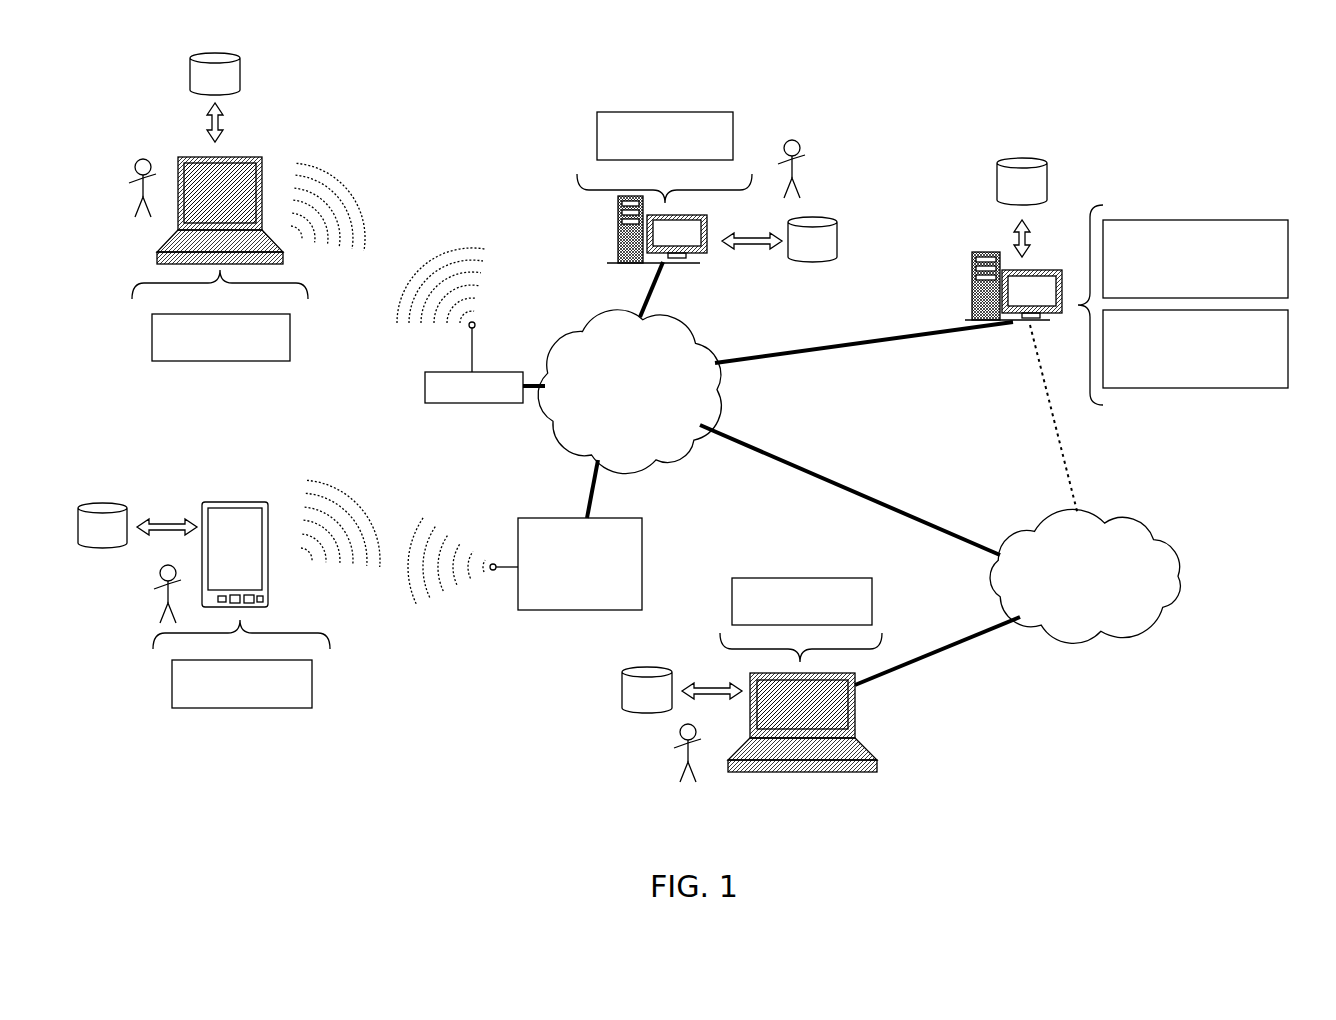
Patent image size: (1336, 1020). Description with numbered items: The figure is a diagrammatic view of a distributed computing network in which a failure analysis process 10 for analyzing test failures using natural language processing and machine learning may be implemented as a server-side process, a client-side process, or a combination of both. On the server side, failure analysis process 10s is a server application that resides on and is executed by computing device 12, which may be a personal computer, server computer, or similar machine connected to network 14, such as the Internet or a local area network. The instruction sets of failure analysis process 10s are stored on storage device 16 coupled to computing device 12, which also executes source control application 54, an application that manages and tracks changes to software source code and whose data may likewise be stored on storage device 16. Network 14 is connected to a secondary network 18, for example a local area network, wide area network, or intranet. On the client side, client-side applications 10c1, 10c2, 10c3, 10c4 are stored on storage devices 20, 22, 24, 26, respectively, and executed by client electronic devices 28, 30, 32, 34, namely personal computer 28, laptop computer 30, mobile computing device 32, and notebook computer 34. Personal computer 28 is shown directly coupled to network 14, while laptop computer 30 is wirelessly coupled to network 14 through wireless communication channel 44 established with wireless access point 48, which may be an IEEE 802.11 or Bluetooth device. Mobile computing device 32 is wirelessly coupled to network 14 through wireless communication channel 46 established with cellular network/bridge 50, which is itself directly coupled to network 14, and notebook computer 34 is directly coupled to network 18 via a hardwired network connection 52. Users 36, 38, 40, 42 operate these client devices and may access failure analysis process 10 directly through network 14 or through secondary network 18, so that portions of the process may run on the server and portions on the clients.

The failure analysis process 10 is at (1130, 119).
The failure analysis process (server-side) 10s is at (1288, 252).
The client-side application 10c1 is at (733, 138).
The client-side application 10c2 is at (290, 337).
The client-side application 10c3 is at (312, 683).
The client-side application 10c4 is at (872, 593).
The computing device 12 is at (970, 267).
The network 14 is at (629, 392).
The storage device 16 is at (1022, 181).
The secondary network 18 is at (1085, 576).
The storage device 20 is at (812, 239).
The storage device 22 is at (215, 74).
The storage device 24 is at (102, 525).
The storage device 26 is at (647, 690).
The personal computer 28 is at (707, 227).
The laptop computer 30 is at (262, 177).
The mobile computing device 32 is at (282, 550).
The notebook computer 34 is at (855, 713).
The user 36 is at (817, 155).
The user 38 is at (108, 183).
The user 40 is at (140, 578).
The user 42 is at (652, 748).
The wireless communication channel 44 is at (410, 223).
The wireless communication channel 46 is at (402, 518).
The wireless access point 48 is at (418, 387).
The cellular network/bridge 50 is at (643, 533).
The network connection 52 is at (1030, 423).
The source control application 54 is at (1288, 348).